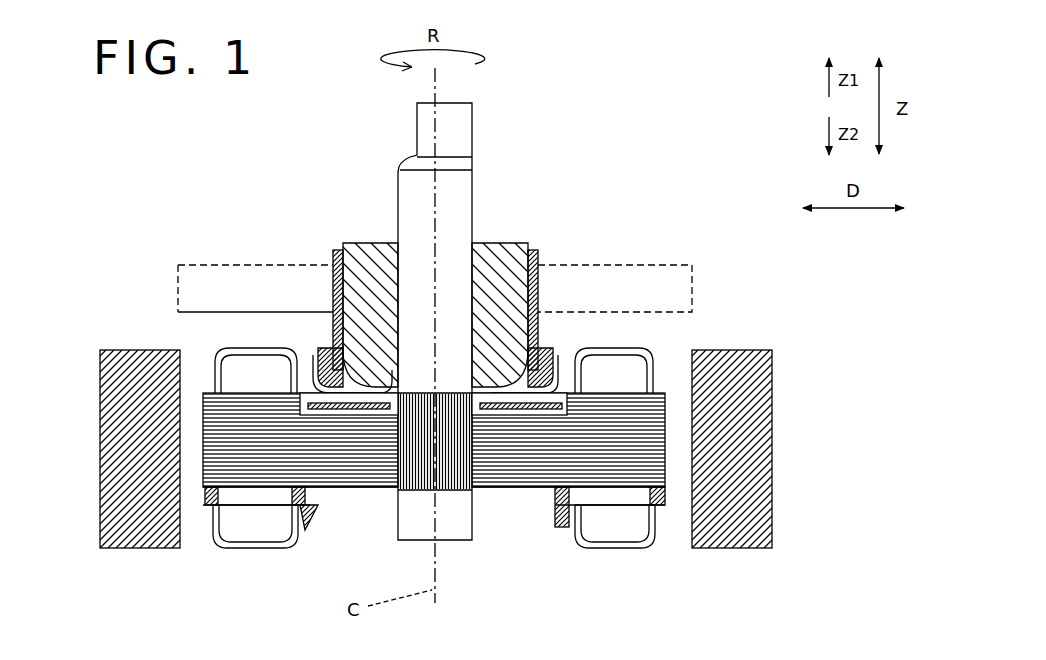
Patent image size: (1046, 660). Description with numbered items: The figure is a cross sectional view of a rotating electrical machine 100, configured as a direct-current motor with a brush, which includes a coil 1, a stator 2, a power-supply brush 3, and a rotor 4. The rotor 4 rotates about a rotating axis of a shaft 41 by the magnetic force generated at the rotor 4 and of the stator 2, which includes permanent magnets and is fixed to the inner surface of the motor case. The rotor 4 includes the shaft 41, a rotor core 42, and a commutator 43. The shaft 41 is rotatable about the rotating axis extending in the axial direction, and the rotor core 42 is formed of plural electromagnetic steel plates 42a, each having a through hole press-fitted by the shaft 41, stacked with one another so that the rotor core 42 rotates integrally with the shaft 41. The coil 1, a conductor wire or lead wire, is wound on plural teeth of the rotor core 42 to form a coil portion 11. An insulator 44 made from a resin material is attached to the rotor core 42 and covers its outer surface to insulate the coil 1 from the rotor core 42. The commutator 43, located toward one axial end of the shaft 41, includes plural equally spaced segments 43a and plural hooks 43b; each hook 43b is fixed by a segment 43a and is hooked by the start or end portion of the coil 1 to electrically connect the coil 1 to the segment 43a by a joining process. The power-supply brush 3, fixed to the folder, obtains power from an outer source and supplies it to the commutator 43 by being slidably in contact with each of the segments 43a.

The rotating electrical machine 100 is at (678, 84).
The coil 1 is at (619, 551).
The coil portion 11 is at (653, 360).
The stator 2 is at (756, 350).
The power-supply brush 3 is at (649, 265).
The rotor 4 is at (481, 150).
The shaft 41 is at (474, 176).
The rotor core 42 is at (517, 492).
The electromagnetic steel plate 42a is at (548, 489).
The commutator 43 is at (530, 245).
The segment 43a is at (333, 253).
The hook 43b is at (322, 356).
The insulator 44 is at (564, 368).